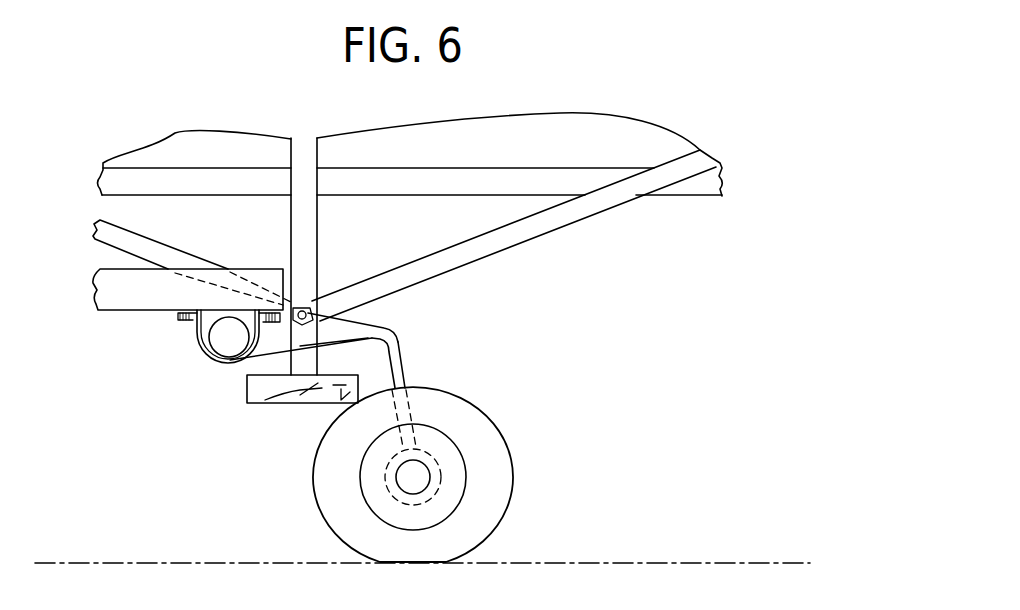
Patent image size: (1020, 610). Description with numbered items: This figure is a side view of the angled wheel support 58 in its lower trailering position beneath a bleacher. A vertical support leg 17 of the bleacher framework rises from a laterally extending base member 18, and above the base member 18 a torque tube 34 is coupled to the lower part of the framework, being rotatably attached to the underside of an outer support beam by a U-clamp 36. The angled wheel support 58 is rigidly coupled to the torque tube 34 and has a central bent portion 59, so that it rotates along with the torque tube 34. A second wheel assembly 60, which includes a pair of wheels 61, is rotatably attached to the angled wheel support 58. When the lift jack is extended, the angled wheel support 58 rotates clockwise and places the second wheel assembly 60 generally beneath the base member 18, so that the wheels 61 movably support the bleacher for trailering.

The vertical support leg 17 is at (300, 153).
The base member 18 is at (253, 387).
The torque tube 34 is at (227, 336).
The U-clamp 36 is at (196, 336).
The angled wheel support 58 is at (397, 362).
The central bent portion 59 is at (393, 323).
The second wheel assembly 60 is at (474, 457).
The wheel 61 is at (522, 404).